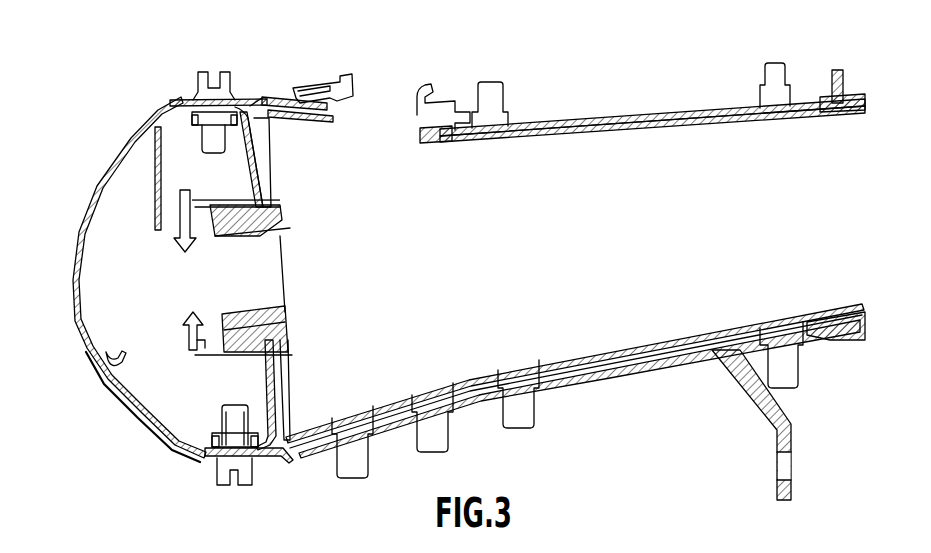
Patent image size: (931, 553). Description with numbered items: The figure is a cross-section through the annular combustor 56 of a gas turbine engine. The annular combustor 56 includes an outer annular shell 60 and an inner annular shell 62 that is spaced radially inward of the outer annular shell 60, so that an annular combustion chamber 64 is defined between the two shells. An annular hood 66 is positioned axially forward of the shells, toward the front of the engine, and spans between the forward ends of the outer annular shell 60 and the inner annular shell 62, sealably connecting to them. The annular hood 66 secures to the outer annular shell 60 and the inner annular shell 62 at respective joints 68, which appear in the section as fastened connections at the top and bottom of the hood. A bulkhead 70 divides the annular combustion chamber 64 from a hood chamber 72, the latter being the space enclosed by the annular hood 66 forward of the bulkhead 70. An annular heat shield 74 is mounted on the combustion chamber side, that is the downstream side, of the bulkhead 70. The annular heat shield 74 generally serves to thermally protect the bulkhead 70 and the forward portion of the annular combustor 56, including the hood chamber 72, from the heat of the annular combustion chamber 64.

The annular combustor 56 is at (96, 467).
The outer annular shell 60 is at (590, 110).
The inner annular shell 62 is at (620, 370).
The annular combustion chamber 64 is at (562, 248).
The annular hood 66 is at (76, 303).
The joints 68 is at (241, 95).
The bulkhead 70 is at (251, 158).
The hood chamber 72 is at (161, 270).
The annular heat shield 74 is at (276, 190).